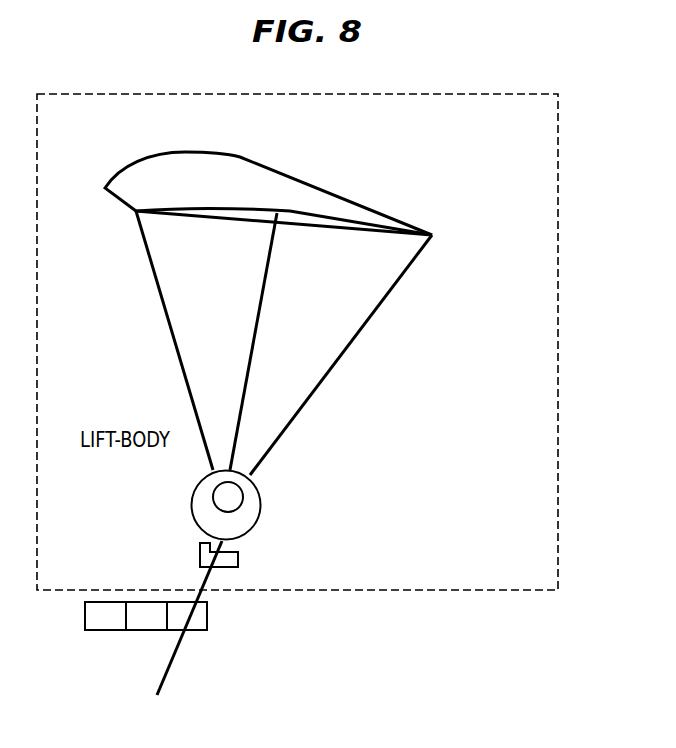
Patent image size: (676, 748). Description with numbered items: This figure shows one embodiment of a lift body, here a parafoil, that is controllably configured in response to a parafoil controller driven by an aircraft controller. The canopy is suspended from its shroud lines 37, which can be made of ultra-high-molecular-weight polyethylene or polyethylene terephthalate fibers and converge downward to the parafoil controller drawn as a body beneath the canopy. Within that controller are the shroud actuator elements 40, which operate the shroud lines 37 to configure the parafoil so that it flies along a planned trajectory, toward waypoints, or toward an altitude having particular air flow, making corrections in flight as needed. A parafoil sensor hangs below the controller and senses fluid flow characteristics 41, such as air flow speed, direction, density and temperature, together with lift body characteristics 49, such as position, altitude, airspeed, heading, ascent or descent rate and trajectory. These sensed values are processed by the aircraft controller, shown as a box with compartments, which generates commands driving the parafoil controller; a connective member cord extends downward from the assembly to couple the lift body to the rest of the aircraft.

The shroud lines 37 is at (258, 302).
The shroud actuator elements 40 is at (220, 500).
The fluid flow characteristics 41 is at (102, 620).
The lift body characteristics 49 is at (143, 620).